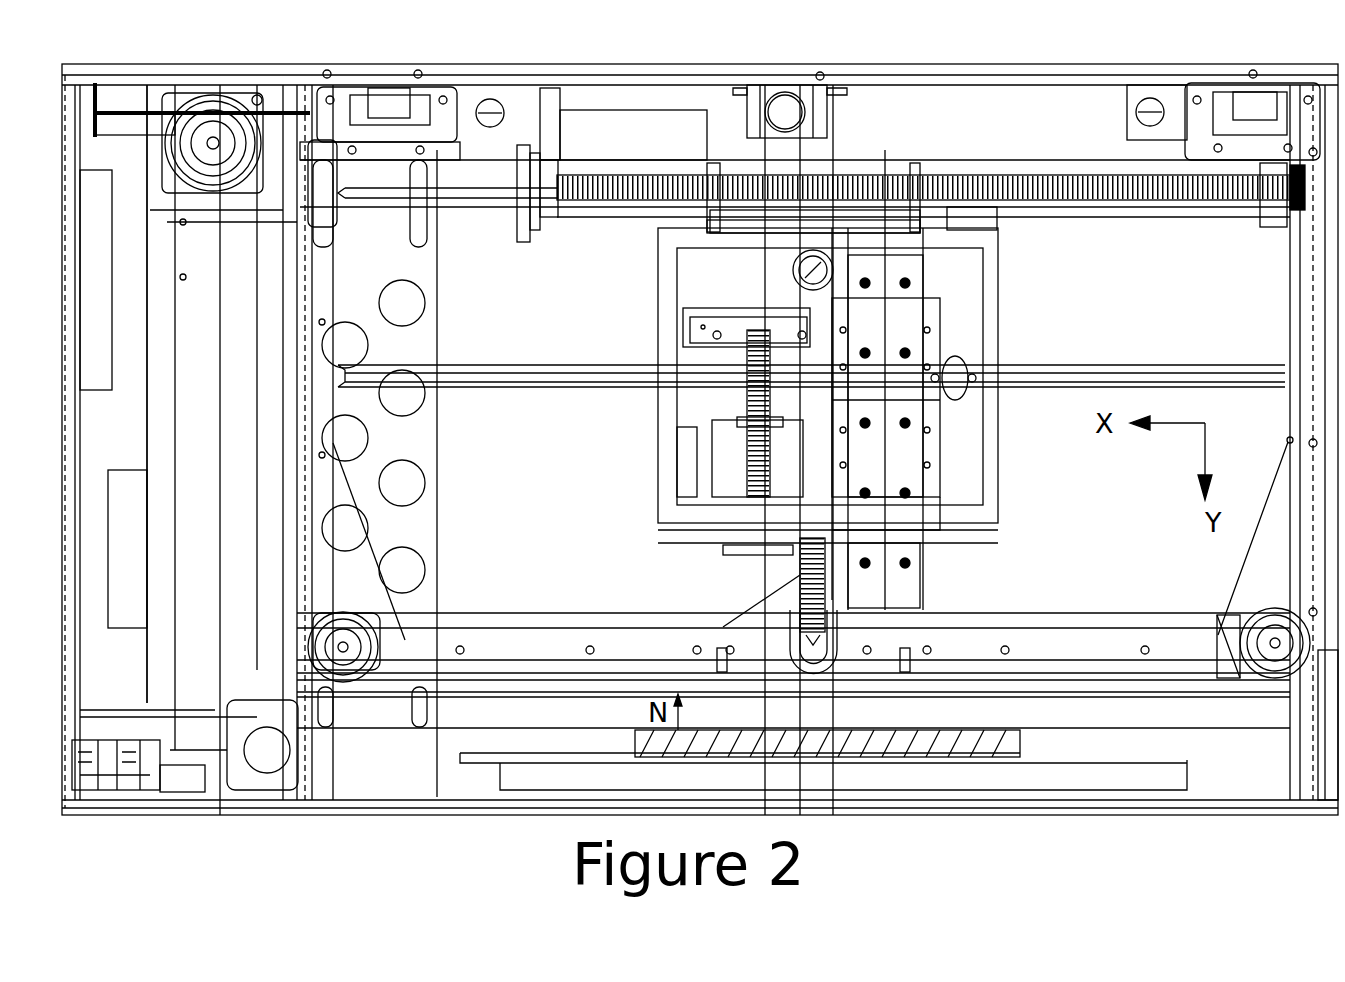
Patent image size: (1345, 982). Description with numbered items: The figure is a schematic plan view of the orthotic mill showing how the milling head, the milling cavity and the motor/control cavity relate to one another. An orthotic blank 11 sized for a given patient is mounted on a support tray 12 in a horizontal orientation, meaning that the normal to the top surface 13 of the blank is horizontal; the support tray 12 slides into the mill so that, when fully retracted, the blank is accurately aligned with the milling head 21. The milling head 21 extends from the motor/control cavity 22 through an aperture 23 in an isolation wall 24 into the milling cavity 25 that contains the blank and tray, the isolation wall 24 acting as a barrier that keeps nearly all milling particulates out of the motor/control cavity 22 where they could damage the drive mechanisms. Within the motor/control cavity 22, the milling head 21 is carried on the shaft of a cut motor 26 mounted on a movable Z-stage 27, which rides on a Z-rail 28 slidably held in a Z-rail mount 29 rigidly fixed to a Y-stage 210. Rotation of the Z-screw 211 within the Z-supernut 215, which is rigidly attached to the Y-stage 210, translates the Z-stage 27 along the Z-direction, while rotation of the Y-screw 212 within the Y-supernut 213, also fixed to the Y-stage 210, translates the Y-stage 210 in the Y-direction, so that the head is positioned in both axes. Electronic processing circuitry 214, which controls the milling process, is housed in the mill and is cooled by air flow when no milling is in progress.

The orthotic blank 11 is at (1020, 743).
The support tray 12 is at (607, 752).
The top surface 13 is at (980, 740).
The milling head 21 is at (827, 652).
The motor/control cavity 22 is at (1145, 535).
The aperture 23 is at (795, 670).
The isolation wall 24 is at (530, 704).
The milling cavity 25 is at (1263, 732).
The cut motor 26 is at (813, 350).
The Z-stage 27 is at (953, 533).
The Z-rail 28 is at (898, 593).
The Z-rail mount 29 is at (928, 341).
The Y-stage 210 is at (958, 283).
The Z-screw 211 is at (748, 478).
The Y-screw 212 is at (1135, 202).
The Y-supernut 213 is at (897, 163).
The electronic processing circuitry 214 is at (150, 502).
The Z-supernut 215 is at (722, 420).